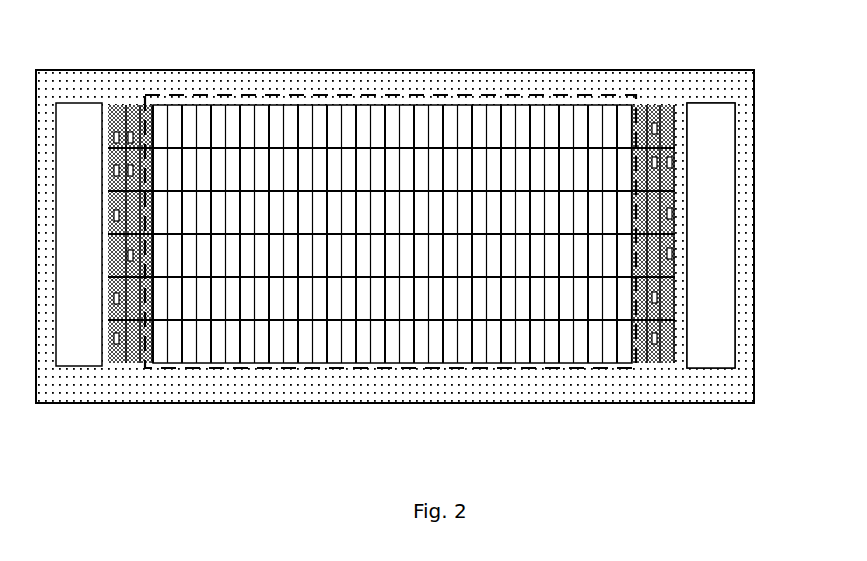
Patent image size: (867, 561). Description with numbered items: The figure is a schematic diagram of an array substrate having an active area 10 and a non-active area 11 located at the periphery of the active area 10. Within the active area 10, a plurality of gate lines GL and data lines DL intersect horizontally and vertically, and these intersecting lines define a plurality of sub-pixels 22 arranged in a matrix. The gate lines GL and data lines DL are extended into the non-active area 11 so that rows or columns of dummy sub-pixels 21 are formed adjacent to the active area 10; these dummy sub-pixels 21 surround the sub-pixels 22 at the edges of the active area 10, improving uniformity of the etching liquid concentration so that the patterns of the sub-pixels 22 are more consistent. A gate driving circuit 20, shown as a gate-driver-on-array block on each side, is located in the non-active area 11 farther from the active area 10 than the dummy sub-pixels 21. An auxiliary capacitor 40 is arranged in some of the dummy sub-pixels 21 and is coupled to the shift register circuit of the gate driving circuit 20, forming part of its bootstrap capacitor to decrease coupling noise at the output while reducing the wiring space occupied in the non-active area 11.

The active area 10 is at (435, 95).
The non-active area 11 is at (747, 102).
The gate driving circuit 20 is at (717, 313).
The dummy sub-pixels 21 is at (128, 363).
The sub-pixels 22 is at (463, 285).
The auxiliary capacitor 40 is at (131, 105).
The data lines DL is at (680, 190).
The gate lines GL is at (578, 365).